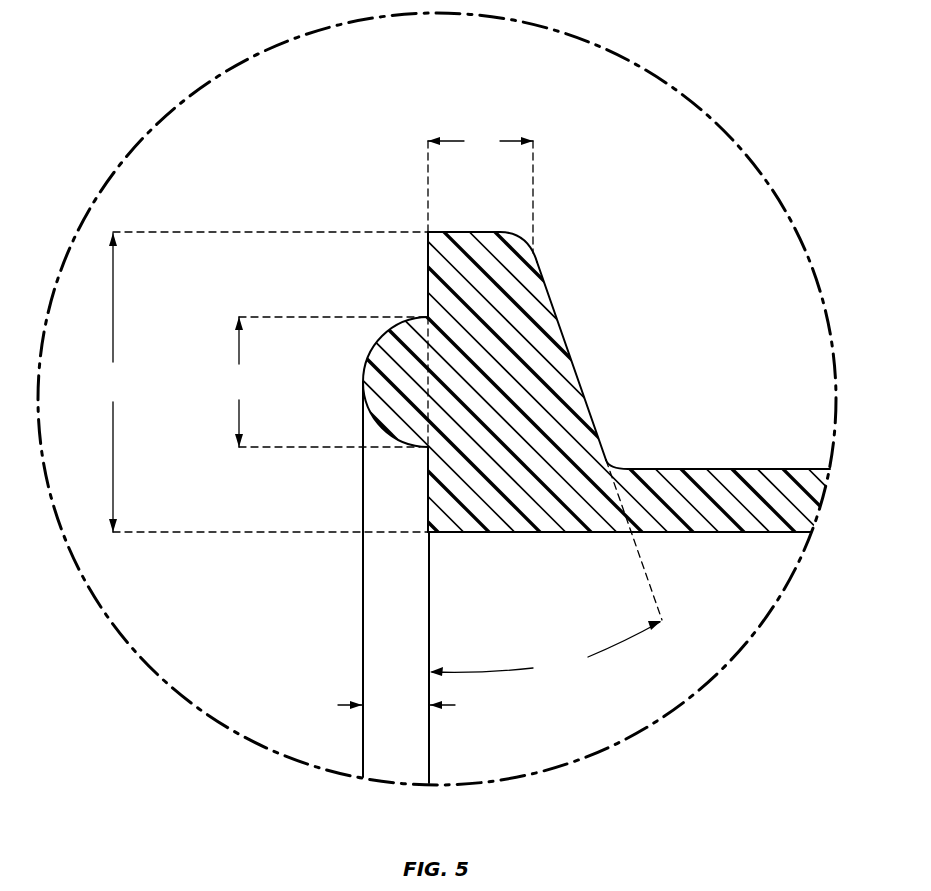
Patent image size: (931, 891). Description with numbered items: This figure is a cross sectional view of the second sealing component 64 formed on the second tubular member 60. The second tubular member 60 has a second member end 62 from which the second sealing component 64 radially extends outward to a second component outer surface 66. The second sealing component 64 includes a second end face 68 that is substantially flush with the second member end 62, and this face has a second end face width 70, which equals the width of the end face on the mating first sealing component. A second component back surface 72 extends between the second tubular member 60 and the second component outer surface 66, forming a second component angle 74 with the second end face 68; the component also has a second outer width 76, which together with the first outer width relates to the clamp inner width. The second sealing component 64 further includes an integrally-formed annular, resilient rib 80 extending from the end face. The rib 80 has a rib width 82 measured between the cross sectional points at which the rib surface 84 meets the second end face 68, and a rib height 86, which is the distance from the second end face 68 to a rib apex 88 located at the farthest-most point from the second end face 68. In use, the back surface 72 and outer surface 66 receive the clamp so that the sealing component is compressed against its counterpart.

The second tubular member 60 is at (690, 488).
The second member end 62 is at (428, 499).
The second sealing component 64 is at (527, 407).
The second component outer surface 66 is at (462, 232).
The second end face 68 is at (428, 283).
The second end face width 70 is at (114, 382).
The second component back surface 72 is at (567, 340).
The second component angle 74 is at (545, 648).
The second outer width 76 is at (480, 142).
The rib 80 is at (388, 367).
The rib width 82 is at (239, 382).
The rib surface 84 is at (372, 414).
The rib height 86 is at (352, 704).
The rib apex 88 is at (362, 381).